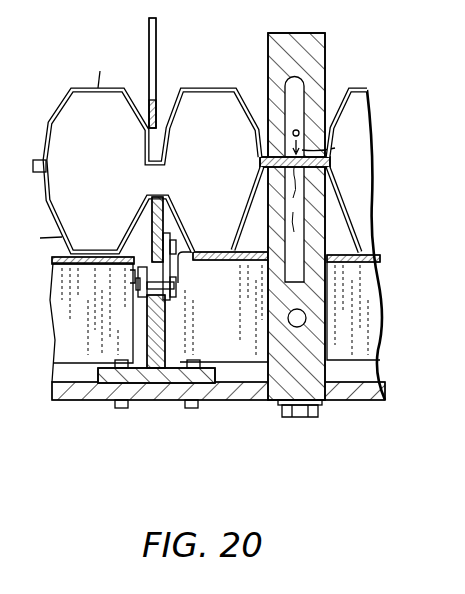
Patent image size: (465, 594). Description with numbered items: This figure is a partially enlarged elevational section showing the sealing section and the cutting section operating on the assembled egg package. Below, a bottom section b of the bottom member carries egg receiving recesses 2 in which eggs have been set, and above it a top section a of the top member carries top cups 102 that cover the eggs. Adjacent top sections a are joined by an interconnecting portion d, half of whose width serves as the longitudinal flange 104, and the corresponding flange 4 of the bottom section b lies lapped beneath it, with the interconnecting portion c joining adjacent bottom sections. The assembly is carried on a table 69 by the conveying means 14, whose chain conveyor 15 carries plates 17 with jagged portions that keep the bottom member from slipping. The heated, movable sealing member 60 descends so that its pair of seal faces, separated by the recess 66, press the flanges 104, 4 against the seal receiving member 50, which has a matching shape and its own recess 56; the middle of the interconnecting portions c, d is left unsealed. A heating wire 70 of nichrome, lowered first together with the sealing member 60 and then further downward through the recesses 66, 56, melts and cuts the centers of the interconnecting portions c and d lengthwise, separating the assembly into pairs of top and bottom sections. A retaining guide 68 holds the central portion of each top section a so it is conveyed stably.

The egg receiving recesses 2 is at (137, 156).
The flange 4 is at (256, 174).
The conveying means 14 is at (169, 299).
The chain conveyor 15 is at (162, 287).
The plate 17 is at (147, 222).
The seal receiving member 50 is at (325, 300).
The recess 56 is at (294, 232).
The sealing member 60 is at (314, 56).
The recess 66 is at (300, 95).
The retaining guide 68 is at (157, 110).
The table 69 is at (87, 260).
The heating wire 70 is at (293, 132).
The top cups 102 is at (68, 118).
The longitudinal flange 104 is at (268, 157).
The top section a is at (106, 74).
The bottom section b is at (45, 237).
The interconnecting portion c is at (322, 141).
The interconnecting portion d is at (293, 207).